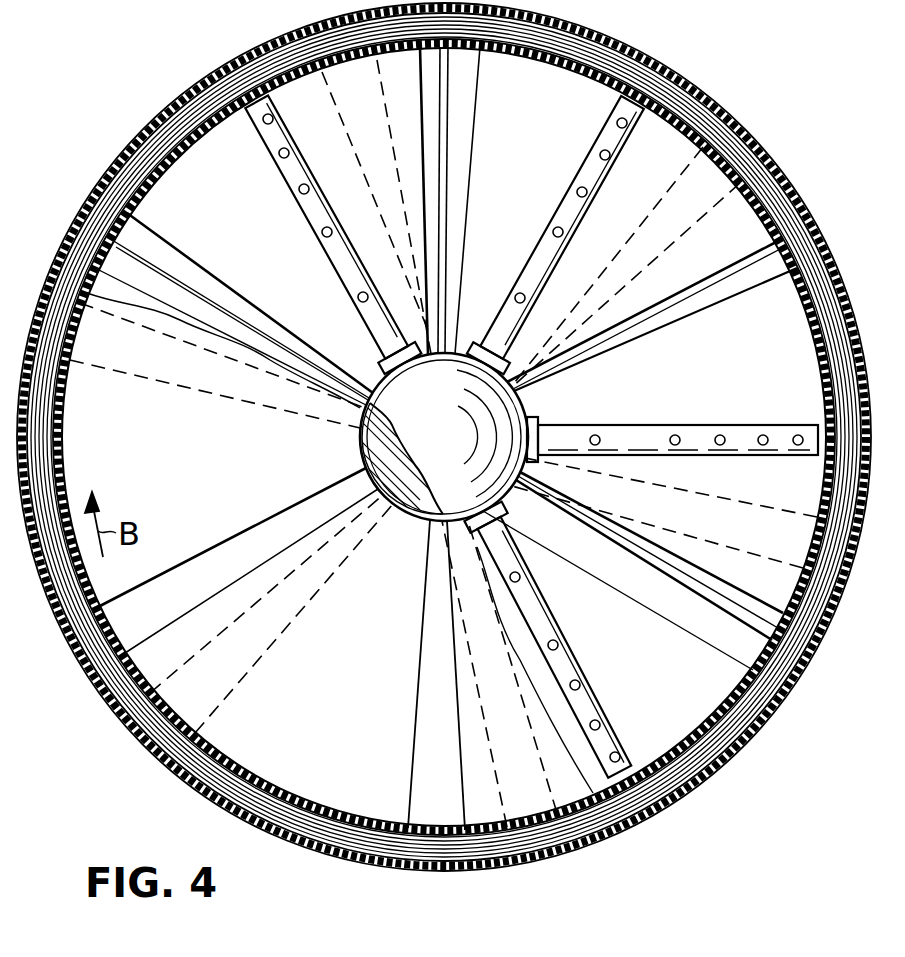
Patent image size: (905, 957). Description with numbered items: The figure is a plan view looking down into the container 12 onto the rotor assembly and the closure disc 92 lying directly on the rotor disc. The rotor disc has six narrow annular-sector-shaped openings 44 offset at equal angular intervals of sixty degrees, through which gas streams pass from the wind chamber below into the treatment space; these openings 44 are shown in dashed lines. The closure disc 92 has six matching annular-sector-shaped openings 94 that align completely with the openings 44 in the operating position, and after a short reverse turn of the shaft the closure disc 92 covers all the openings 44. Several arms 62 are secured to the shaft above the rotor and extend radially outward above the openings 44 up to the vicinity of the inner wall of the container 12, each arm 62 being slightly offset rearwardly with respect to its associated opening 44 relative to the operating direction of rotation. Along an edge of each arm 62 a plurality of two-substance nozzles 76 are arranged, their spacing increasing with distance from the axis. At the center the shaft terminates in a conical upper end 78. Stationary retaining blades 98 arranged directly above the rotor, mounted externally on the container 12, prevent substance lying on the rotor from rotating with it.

The container 12 is at (192, 108).
The arm 62 is at (290, 183).
The nozzle 76 is at (578, 188).
The conical upper end 78 is at (522, 408).
The opening of the closure disc 94 is at (237, 543).
The retaining blade 98 is at (733, 620).
The opening of the rotor disc 44 is at (787, 530).
The closure disc 92 is at (366, 673).